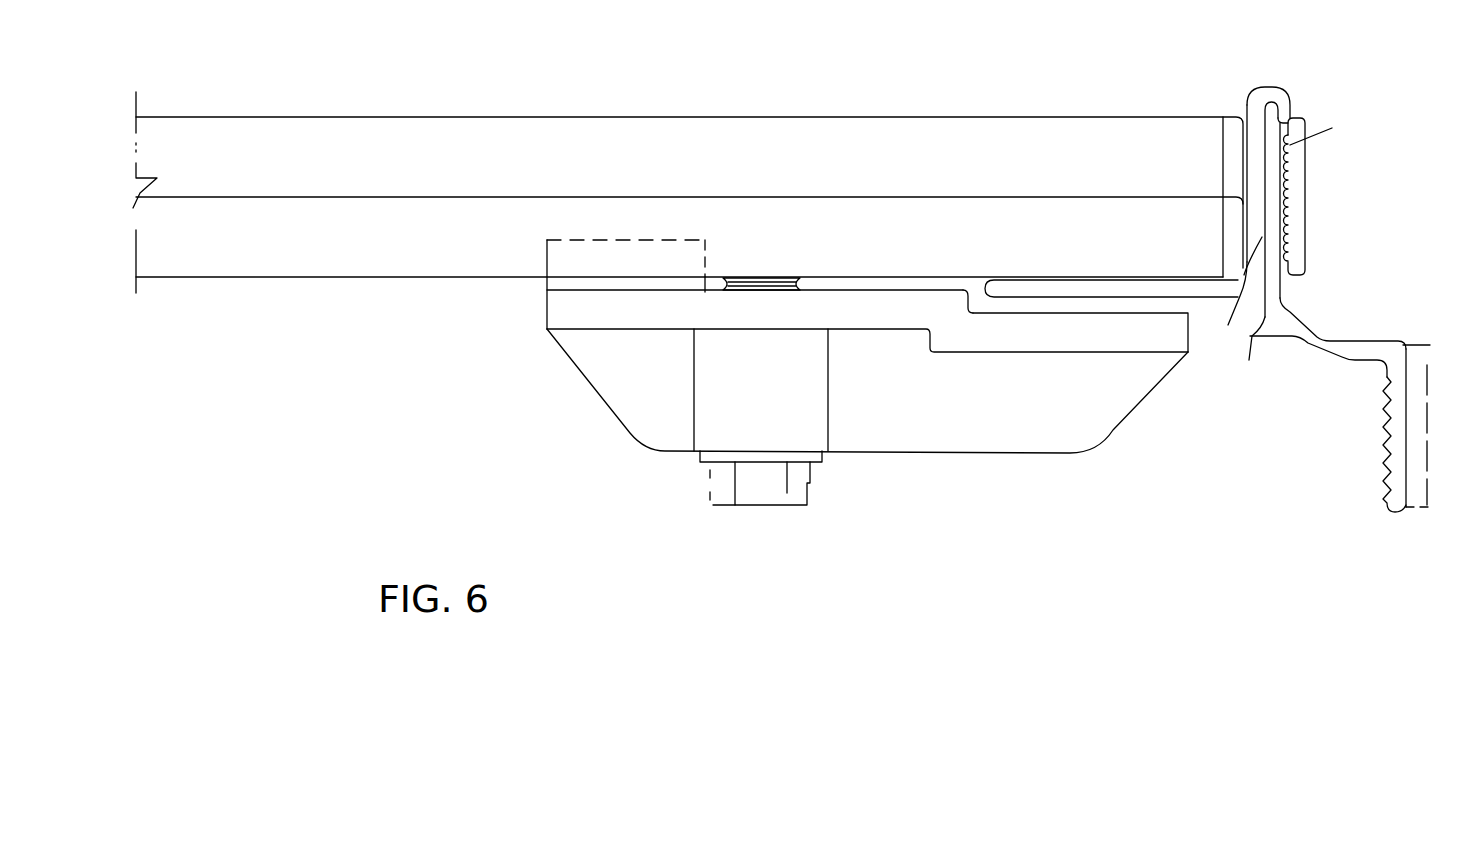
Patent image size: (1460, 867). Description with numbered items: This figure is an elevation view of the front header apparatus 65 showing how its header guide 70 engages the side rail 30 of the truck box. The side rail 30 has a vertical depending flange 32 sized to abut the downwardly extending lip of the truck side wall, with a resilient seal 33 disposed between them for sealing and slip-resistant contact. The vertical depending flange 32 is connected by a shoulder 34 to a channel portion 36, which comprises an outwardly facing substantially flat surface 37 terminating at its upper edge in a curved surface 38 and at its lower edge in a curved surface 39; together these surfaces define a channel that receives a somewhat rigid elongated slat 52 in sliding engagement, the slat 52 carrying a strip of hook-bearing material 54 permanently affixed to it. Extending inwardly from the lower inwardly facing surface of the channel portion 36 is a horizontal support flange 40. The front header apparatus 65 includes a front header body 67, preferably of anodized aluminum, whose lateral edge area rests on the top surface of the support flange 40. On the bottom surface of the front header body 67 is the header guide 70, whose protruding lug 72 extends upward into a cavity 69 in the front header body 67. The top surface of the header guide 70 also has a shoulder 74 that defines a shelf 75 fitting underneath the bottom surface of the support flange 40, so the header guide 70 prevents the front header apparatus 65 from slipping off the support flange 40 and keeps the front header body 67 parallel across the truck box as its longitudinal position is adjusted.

The side rail 30 is at (1320, 402).
The vertical depending flange 32 is at (1387, 437).
The seal 33 is at (1418, 360).
The shoulder 34 is at (1320, 337).
The channel portion 36 is at (1243, 96).
The outwardly facing substantially flat surface 37 is at (1231, 306).
The curved surface 38 is at (1264, 92).
The curved surface 39 is at (1256, 357).
The horizontal support flange 40 is at (1103, 283).
The elongated slat 52 is at (1273, 217).
The hook-bearing material 54 is at (1292, 190).
The front header apparatus 65 is at (912, 92).
The front header body 67 is at (988, 178).
The cavity 69 is at (705, 240).
The header guide 70 is at (1078, 453).
The protruding lug 72 is at (549, 290).
The shoulder 74 is at (962, 295).
The shelf 75 is at (1050, 315).